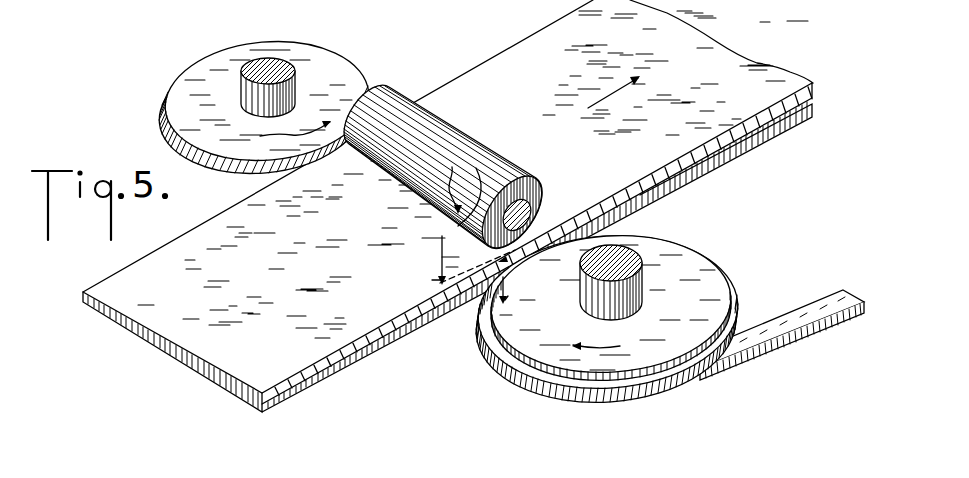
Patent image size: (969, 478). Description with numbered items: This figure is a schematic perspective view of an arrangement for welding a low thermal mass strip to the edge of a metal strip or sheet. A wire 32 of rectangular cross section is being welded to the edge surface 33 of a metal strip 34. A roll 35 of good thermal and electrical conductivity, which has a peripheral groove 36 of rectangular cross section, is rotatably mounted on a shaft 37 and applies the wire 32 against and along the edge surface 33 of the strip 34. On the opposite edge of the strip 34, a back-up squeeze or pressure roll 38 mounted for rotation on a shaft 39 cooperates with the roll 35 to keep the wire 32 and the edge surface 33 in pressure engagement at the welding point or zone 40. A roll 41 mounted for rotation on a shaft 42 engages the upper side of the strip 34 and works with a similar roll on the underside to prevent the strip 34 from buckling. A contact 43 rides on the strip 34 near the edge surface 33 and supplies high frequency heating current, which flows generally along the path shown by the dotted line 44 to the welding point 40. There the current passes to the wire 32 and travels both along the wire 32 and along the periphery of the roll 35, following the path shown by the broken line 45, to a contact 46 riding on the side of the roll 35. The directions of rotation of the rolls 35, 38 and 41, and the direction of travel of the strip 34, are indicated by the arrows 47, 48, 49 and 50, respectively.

The wire 32 is at (801, 318).
The edge surface 33 is at (416, 323).
The metal strip 34 is at (321, 276).
The roll 35 is at (688, 254).
The peripheral groove 36 is at (782, 325).
The shaft 37 is at (638, 290).
The back-up squeeze or pressure roll 38 is at (333, 50).
The shaft 39 is at (285, 95).
The welding point or zone 40 is at (505, 260).
The roll 41 is at (470, 171).
The shaft 42 is at (522, 207).
The contact 43 is at (434, 280).
The dotted line 44 is at (468, 281).
The broken line 45 is at (510, 285).
The contact 46 is at (508, 296).
The arrow 47 is at (620, 346).
The arrow 48 is at (277, 135).
The arrow 49 is at (456, 184).
The arrow 50 is at (610, 96).